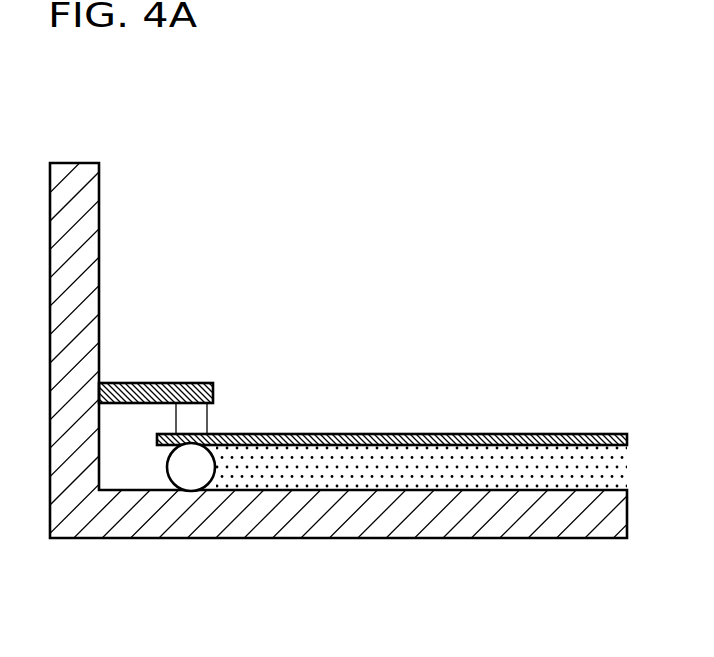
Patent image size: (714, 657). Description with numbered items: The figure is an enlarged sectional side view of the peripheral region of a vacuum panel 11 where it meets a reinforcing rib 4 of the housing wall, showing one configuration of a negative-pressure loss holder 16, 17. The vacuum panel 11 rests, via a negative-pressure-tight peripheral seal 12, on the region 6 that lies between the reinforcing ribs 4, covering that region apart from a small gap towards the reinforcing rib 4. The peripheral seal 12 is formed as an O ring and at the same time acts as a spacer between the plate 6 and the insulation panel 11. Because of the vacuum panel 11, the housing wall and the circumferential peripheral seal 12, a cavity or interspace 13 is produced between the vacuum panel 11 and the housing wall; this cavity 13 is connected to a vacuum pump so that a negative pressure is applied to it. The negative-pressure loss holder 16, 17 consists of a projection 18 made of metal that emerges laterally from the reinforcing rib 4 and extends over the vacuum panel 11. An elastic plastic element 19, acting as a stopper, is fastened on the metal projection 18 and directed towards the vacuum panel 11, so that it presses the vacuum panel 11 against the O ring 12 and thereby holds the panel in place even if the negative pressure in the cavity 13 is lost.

The reinforcing rib 4 is at (70, 163).
The region between the reinforcing ribs 6 is at (537, 540).
The vacuum panel 11 is at (368, 434).
The peripheral seal 12 is at (191, 475).
The cavity 13 is at (537, 455).
The negative-pressure loss holder 16 is at (190, 370).
The negative-pressure loss holder 17 is at (205, 352).
The projection 18 is at (150, 383).
The elastic plastic element 19 is at (197, 421).